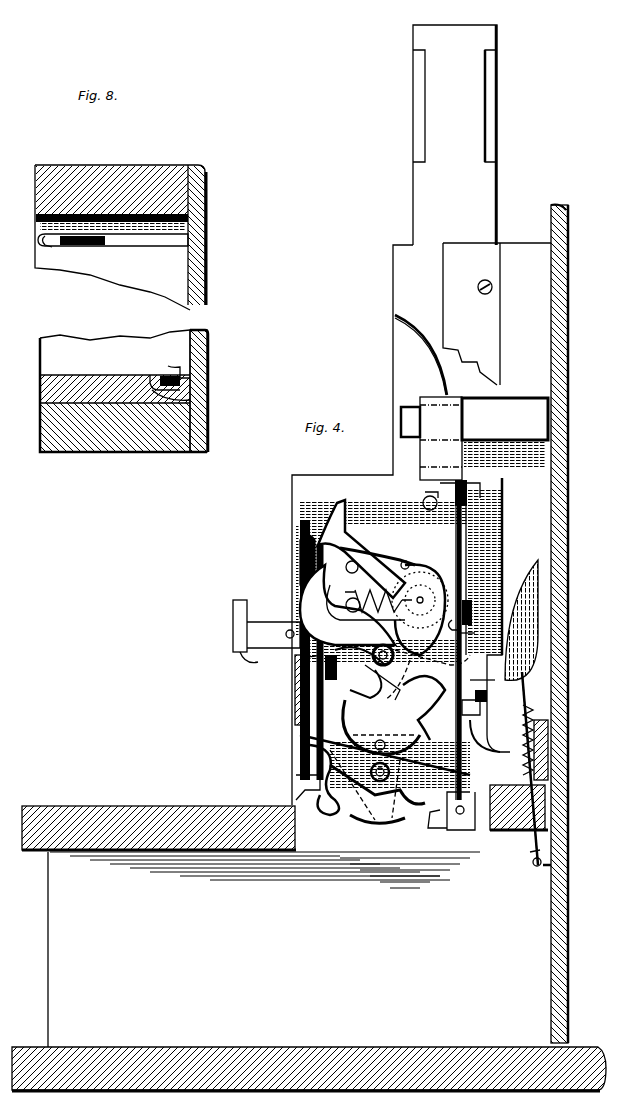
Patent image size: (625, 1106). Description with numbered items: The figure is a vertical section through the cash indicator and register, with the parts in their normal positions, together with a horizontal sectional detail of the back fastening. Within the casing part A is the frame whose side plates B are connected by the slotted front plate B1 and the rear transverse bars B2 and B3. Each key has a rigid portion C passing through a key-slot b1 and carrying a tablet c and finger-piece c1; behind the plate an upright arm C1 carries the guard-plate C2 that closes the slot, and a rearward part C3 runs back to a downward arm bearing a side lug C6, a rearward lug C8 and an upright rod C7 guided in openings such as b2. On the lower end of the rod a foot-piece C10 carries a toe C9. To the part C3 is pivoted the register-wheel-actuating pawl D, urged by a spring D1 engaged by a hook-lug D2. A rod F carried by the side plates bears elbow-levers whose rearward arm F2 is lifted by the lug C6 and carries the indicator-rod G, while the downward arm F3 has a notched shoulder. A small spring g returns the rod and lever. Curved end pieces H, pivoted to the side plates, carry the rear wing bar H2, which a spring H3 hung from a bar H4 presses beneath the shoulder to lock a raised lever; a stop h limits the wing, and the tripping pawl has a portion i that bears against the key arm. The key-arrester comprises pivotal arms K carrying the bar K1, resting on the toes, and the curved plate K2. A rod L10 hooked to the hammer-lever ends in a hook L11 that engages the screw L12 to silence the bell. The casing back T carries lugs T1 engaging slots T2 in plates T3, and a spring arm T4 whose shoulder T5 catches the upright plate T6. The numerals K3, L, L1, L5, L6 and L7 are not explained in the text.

In FIG. 8, the casing part A is at (120, 166).
In FIG. 4, the casing part A is at (309, 558).
In FIG. 8, the casing back T is at (200, 330).
In FIG. 4, the casing back T is at (568, 350).
In FIG. 8, the lug T1 is at (184, 372).
In FIG. 8, the recess or slot T2 is at (160, 378).
In FIG. 8, the plate T3 is at (194, 396).
In FIG. 8, the spring arm or plate T4 is at (140, 238).
In FIG. 4, the spring arm or plate T4 is at (505, 432).
In FIG. 8, the shoulder T5 is at (48, 244).
In FIG. 4, the shoulder T5 is at (404, 428).
In FIG. 8, the upright plate T6 is at (90, 246).
In FIG. 4, the upright plate T6 is at (441, 438).
In FIG. 4, the spiral spring g is at (423, 500).
In FIG. 4, the side or end plate B is at (372, 522).
In FIG. 4, the front plate B1 is at (292, 690).
In FIG. 4, the transverse bar B2 is at (480, 742).
In FIG. 4, the transverse bar B3 is at (504, 500).
In FIG. 4, the register-wheel-actuating pawl D is at (370, 565).
In FIG. 4, the pawl spring D1 is at (420, 609).
In FIG. 4, the hook-lug D2 is at (350, 622).
In FIG. 4, the rigid key portion C is at (282, 662).
In FIG. 4, the upright arm C1 is at (256, 676).
In FIG. 4, the guard-plate C2 is at (300, 746).
In FIG. 4, the rearward rigid part C3 is at (378, 611).
In FIG. 4, the side lug C6 is at (480, 710).
In FIG. 4, the upright rod C7 is at (458, 652).
In FIG. 4, the rearwardly-extending lug C8 is at (475, 616).
In FIG. 4, the toe C9 is at (438, 828).
In FIG. 4, the foot-piece C10 is at (490, 834).
In FIG. 4, the tablet or plate c is at (238, 628).
In FIG. 4, the finger-piece c1 is at (244, 654).
In FIG. 4, the key-slot b1 is at (298, 580).
In FIG. 4, the guide-opening b2 is at (488, 696).
In FIG. 4, the stop h is at (318, 703).
In FIG. 4, the pawl portion i is at (300, 780).
In FIG. 4, the curved end piece H is at (355, 690).
In FIG. 4, the rear wing bar H2 is at (424, 708).
In FIG. 4, the wing spring H3 is at (401, 726).
In FIG. 4, the bar H4 is at (360, 661).
In FIG. 4, the rod F is at (381, 672).
In FIG. 4, the lever arm F2 is at (432, 656).
In FIG. 4, the lever arm F3 is at (401, 680).
In FIG. 4, the pivotal arm K is at (400, 826).
In FIG. 4, the arrester bar K1 is at (455, 780).
In FIG. 4, the curved arrester plate K2 is at (368, 825).
In FIG. 4, the hook K3 is at (337, 780).
In FIG. 4, the rod L is at (463, 600).
In FIG. 4, the rod collar L1 is at (455, 592).
In FIG. 4, the spring L5 is at (548, 745).
In FIG. 4, the disk L6 is at (521, 620).
In FIG. 4, the lever L7 is at (540, 690).
In FIG. 4, the rod L10 is at (530, 851).
In FIG. 4, the hook or ring L11 is at (544, 868).
In FIG. 4, the screw L12 is at (532, 864).
In FIG. 4, the indicator-rod G is at (490, 680).